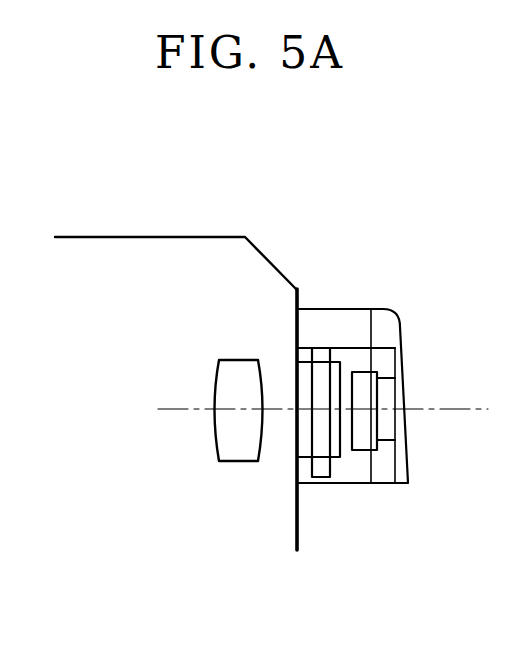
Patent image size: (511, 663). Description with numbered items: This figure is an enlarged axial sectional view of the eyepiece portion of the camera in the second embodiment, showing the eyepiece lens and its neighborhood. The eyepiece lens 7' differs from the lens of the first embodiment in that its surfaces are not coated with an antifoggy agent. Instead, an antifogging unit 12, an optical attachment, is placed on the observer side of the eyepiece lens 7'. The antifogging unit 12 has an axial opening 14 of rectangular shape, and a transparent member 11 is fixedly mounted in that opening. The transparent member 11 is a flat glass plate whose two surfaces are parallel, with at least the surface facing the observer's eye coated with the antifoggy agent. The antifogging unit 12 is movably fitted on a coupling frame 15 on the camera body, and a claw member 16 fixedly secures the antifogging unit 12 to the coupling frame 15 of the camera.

The eyepiece lens 7' is at (259, 328).
The transparent member 11 is at (358, 445).
The antifogging unit 12 is at (320, 318).
The axial opening 14 is at (383, 378).
The coupling frame 15 is at (301, 446).
The claw member 16 is at (318, 375).